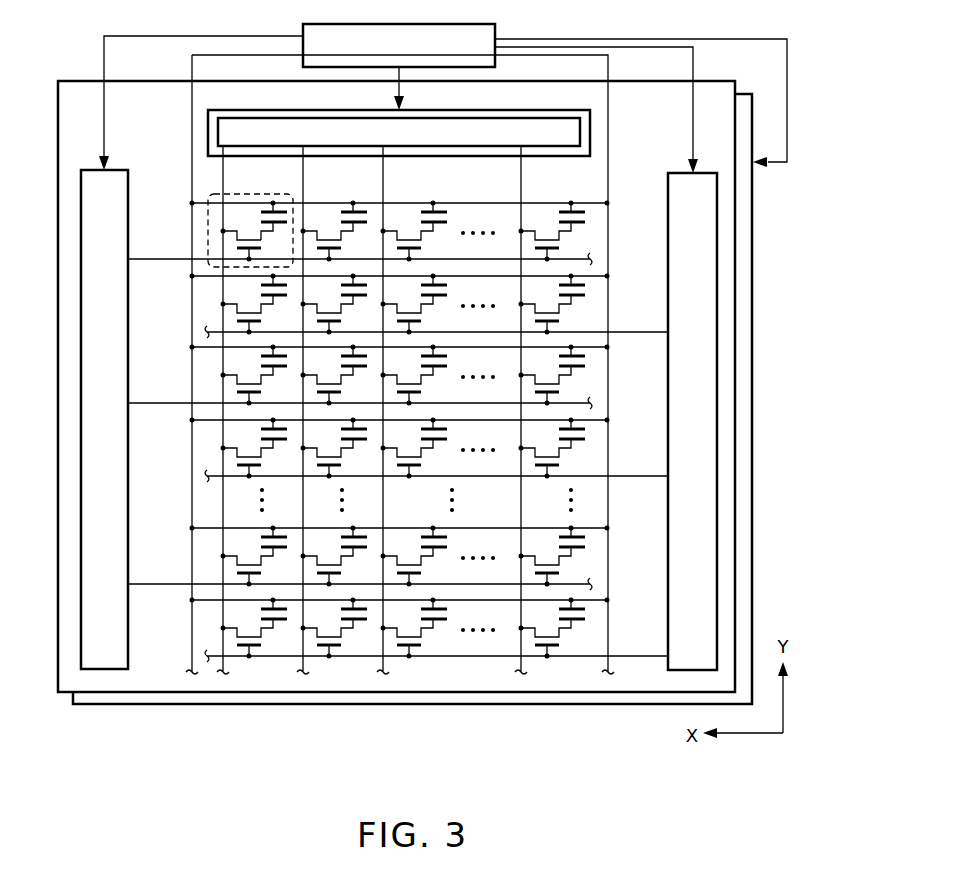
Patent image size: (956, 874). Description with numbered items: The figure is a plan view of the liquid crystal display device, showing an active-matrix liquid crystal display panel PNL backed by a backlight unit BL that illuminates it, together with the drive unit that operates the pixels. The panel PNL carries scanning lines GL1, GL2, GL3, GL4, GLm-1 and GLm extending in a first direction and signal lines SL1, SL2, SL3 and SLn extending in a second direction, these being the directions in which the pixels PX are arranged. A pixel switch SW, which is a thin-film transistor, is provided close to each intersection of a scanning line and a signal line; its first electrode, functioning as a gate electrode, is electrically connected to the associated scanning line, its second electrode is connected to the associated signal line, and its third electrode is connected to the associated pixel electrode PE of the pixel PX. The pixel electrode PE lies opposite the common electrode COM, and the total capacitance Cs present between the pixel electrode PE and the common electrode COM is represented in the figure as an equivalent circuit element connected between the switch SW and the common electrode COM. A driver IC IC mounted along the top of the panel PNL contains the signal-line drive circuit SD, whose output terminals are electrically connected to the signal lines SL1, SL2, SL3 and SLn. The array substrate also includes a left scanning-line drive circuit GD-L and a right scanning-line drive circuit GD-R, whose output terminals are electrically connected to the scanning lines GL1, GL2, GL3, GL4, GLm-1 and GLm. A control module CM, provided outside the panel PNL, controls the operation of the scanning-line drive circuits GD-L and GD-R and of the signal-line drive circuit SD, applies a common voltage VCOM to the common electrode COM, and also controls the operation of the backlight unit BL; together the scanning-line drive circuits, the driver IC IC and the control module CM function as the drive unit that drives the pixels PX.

The liquid crystal display panel PNL is at (737, 328).
The backlight unit BL is at (753, 255).
The control module CM is at (399, 67).
The common voltage VCOM is at (398, 104).
The left scanning-line drive circuit GD-L is at (104, 419).
The right scanning-line drive circuit GD-R is at (692, 421).
The driver IC is at (293, 110).
The signal-line drive circuit SD is at (399, 132).
The common electrode COM is at (282, 208).
The signal line SL1 is at (239, 410).
The signal line SL2 is at (319, 410).
The signal line SL3 is at (399, 410).
The signal line SLn is at (537, 410).
The scanning line GL1 is at (360, 251).
The scanning line GL2 is at (436, 324).
The scanning line GL3 is at (360, 394).
The scanning line GL4 is at (436, 469).
The scanning line GLm-1 is at (360, 575).
The scanning line GLm is at (436, 648).
The pixel PX is at (208, 196).
The total capacitance Cs is at (258, 214).
The pixel electrode PE is at (275, 229).
The pixel switch SW is at (237, 247).